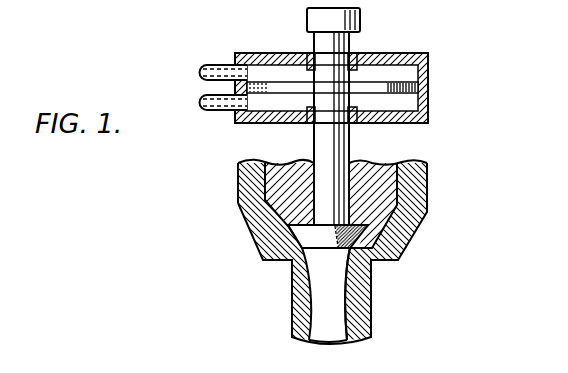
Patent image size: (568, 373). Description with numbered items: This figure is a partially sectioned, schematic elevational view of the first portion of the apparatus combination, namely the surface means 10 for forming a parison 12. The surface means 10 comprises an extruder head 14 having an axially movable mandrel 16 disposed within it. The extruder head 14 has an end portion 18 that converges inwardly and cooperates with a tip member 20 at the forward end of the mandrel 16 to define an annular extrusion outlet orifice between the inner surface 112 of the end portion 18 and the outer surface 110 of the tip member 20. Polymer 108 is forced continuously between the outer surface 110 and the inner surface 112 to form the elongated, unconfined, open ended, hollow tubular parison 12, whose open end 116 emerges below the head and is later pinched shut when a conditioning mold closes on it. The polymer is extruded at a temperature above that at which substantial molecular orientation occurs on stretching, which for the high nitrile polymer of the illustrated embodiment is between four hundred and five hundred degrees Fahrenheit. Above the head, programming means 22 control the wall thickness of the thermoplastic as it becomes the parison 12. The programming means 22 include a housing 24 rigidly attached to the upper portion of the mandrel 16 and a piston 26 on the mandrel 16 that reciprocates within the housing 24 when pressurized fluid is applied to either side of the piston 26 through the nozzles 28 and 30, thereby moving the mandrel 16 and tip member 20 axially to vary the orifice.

The surface means 10 is at (332, 253).
The parison 12 is at (372, 336).
The extruder head 14 is at (420, 198).
The mandrel 16 is at (313, 145).
The end portion 18 is at (237, 200).
The tip member 20 is at (293, 278).
The programming means 22 is at (335, 85).
The housing 24 is at (388, 55).
The piston 26 is at (396, 82).
The nozzle 28 is at (213, 64).
The nozzle 30 is at (213, 111).
The polymer 108 is at (380, 183).
The outer surface 110 is at (330, 238).
The inner surface 112 is at (336, 268).
The open end 116 is at (330, 326).